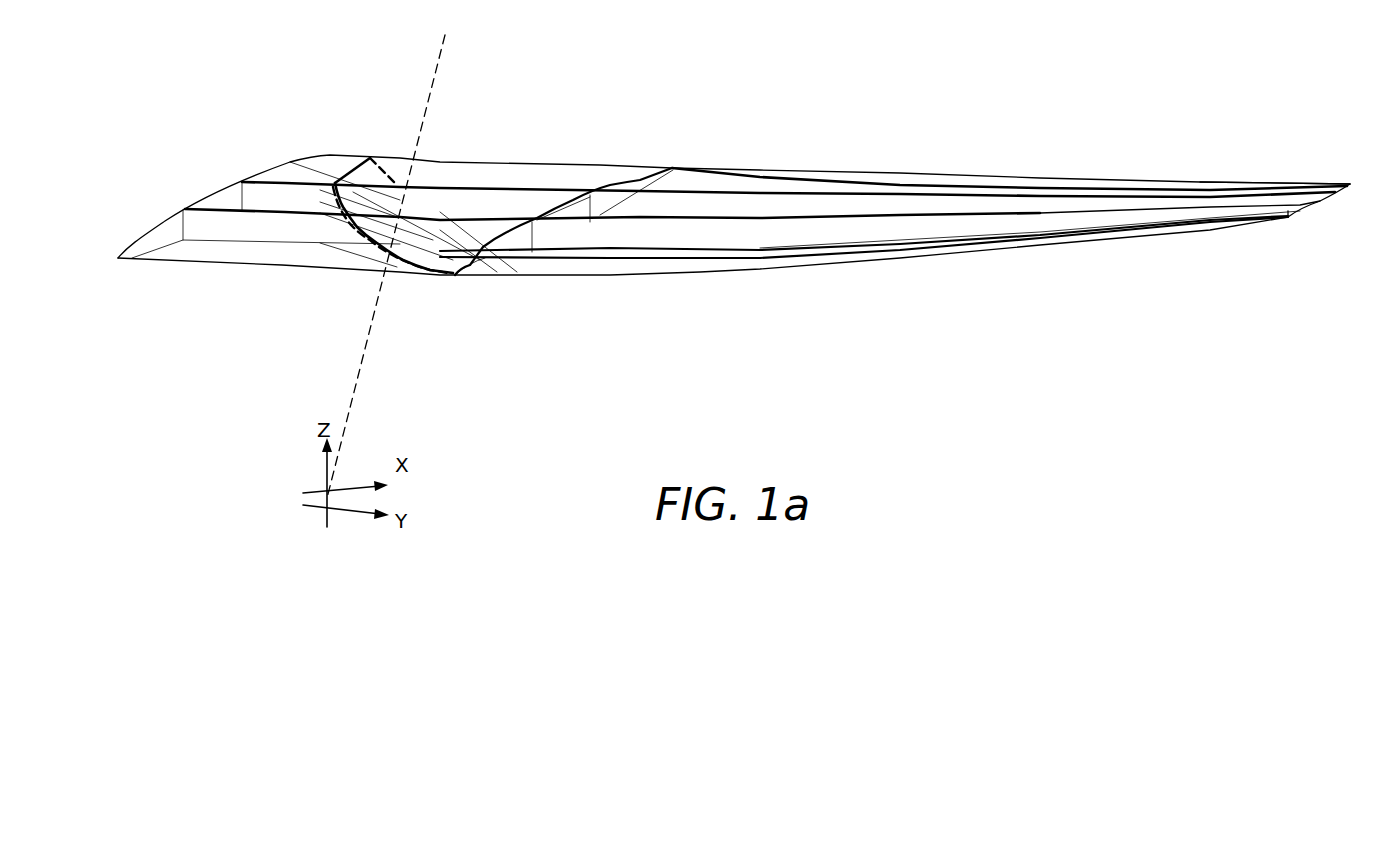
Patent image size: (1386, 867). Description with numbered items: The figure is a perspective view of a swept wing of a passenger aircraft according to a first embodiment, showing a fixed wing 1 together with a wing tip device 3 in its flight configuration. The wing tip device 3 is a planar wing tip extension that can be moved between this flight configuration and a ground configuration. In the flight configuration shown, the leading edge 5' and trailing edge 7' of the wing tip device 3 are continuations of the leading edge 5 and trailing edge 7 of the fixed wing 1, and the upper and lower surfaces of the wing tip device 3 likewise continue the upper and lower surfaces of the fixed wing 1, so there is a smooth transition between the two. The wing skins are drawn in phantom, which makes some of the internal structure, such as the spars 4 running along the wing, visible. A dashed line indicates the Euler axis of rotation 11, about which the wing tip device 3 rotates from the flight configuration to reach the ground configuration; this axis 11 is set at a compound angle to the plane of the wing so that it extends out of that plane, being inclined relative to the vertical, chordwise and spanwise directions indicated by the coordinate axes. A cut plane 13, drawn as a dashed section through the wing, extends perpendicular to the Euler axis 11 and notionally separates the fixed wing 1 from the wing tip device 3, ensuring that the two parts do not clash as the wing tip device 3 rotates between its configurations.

The fixed wing 1 is at (280, 170).
The wing tip device 3 is at (750, 263).
The spars 4 is at (247, 195).
The leading edge of the fixed wing 5 is at (266, 278).
The leading edge of the wing tip device 5' is at (556, 247).
The trailing edge of the fixed wing 7 is at (788, 148).
The trailing edge of the wing tip device 7' is at (1009, 151).
The Euler axis of rotation 11 is at (437, 62).
The cut plane 13 is at (350, 153).